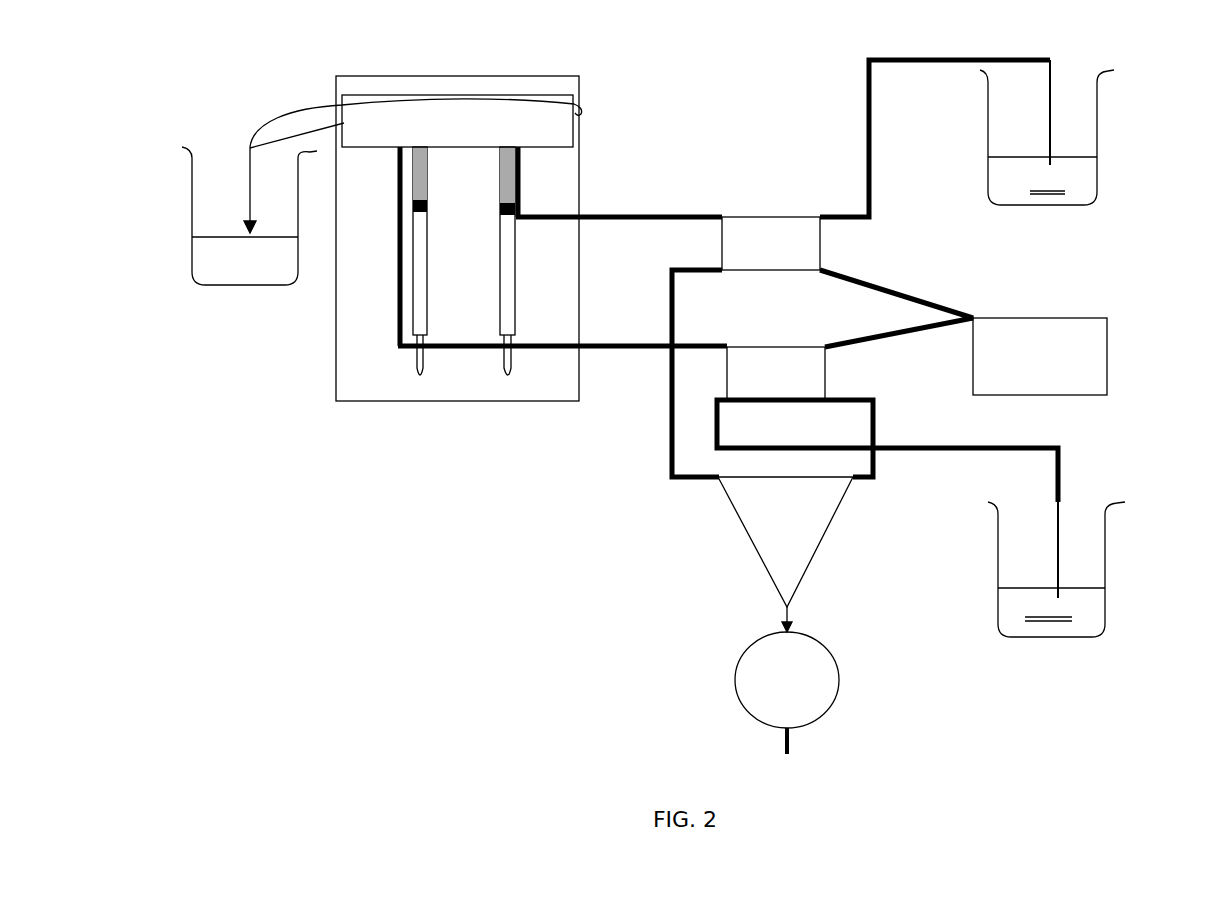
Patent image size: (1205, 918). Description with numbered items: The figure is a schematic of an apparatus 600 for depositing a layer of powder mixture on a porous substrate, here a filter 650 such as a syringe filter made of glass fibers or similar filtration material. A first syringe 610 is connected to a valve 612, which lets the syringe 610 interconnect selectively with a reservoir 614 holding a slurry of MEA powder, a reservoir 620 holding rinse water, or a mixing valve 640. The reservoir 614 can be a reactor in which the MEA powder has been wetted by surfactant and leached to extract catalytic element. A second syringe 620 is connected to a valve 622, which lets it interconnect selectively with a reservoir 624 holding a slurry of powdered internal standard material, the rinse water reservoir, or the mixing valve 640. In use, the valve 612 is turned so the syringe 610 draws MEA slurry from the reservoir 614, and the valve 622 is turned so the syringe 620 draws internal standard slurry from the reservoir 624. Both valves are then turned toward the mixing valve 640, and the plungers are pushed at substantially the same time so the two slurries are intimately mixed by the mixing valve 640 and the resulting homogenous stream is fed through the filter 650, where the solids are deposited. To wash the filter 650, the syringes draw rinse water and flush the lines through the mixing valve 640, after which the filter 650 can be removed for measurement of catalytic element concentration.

The apparatus 600 is at (703, 97).
The first syringe 610 is at (611, 261).
The second syringe 620 is at (752, 271).
The valve 612 is at (767, 244).
The valve 622 is at (777, 370).
The reservoir 614 is at (1047, 159).
The reservoir 624 is at (1056, 590).
The mixing valve 640 is at (785, 554).
The filter 650 is at (771, 702).